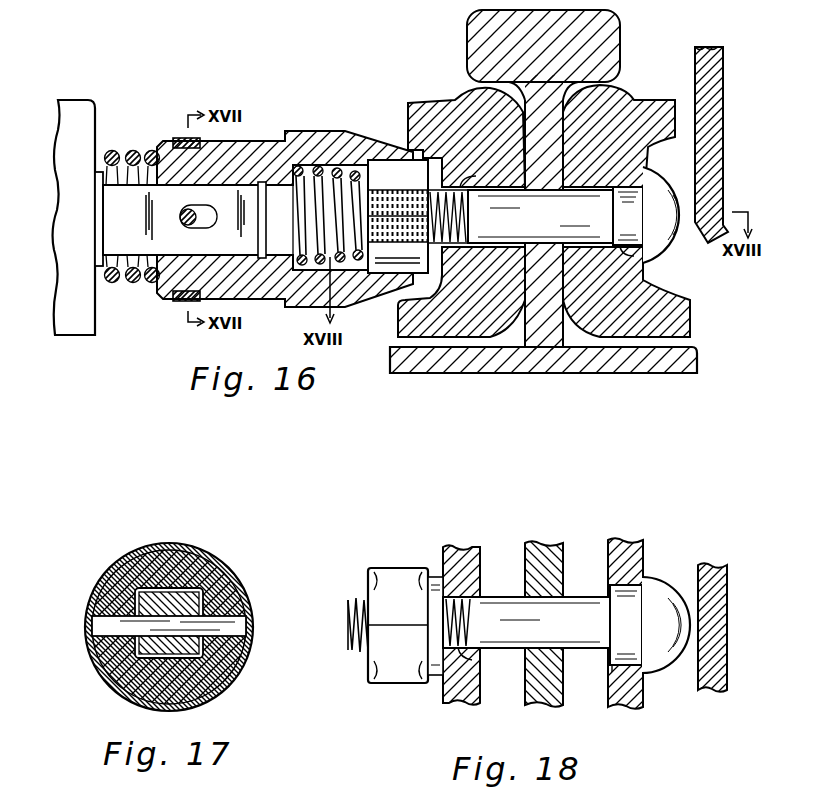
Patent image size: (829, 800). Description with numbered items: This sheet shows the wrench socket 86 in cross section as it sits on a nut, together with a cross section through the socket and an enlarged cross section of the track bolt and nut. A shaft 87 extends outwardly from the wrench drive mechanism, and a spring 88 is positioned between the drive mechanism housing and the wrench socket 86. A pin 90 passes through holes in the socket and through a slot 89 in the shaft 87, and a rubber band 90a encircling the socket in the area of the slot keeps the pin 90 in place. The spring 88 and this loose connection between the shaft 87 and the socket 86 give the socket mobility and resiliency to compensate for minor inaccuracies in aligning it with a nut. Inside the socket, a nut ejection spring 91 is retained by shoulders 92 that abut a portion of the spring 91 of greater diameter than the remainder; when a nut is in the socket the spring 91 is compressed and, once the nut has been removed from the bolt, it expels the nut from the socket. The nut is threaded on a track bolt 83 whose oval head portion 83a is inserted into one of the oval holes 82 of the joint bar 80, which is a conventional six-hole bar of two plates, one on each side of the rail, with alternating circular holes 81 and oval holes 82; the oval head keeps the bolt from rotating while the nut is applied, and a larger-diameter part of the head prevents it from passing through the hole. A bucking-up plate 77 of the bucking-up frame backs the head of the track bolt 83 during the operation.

In FIG. 16, the bucking-up plate 77 is at (700, 236).
In FIG. 18, the bucking-up plate 77 is at (698, 578).
In FIG. 16, the joint bar 80 is at (445, 102).
In FIG. 18, the joint bar 80 is at (462, 547).
In FIG. 16, the circular holes 81 is at (473, 188).
In FIG. 18, the circular holes 81 is at (462, 660).
In FIG. 16, the oval holes 82 is at (616, 250).
In FIG. 18, the oval holes 82 is at (612, 672).
In FIG. 16, the track bolt 83 is at (563, 211).
In FIG. 18, the track bolt 83 is at (513, 596).
In FIG. 16, the oval head portion 83a is at (606, 197).
In FIG. 18, the oval head portion 83a is at (612, 598).
In FIG. 16, the wrench socket 86 is at (370, 131).
In FIG. 17, the wrench socket 86 is at (112, 657).
In FIG. 16, the shaft 87 is at (115, 213).
In FIG. 17, the shaft 87 is at (140, 601).
In FIG. 16, the spring 88 is at (126, 284).
In FIG. 16, the slot 89 is at (216, 213).
In FIG. 16, the pin 90 is at (196, 227).
In FIG. 17, the pin 90 is at (233, 623).
In FIG. 16, the rubber band 90a is at (177, 139).
In FIG. 17, the rubber band 90a is at (248, 596).
In FIG. 16, the nut ejection spring 91 is at (303, 141).
In FIG. 16, the shoulders 92 is at (326, 172).